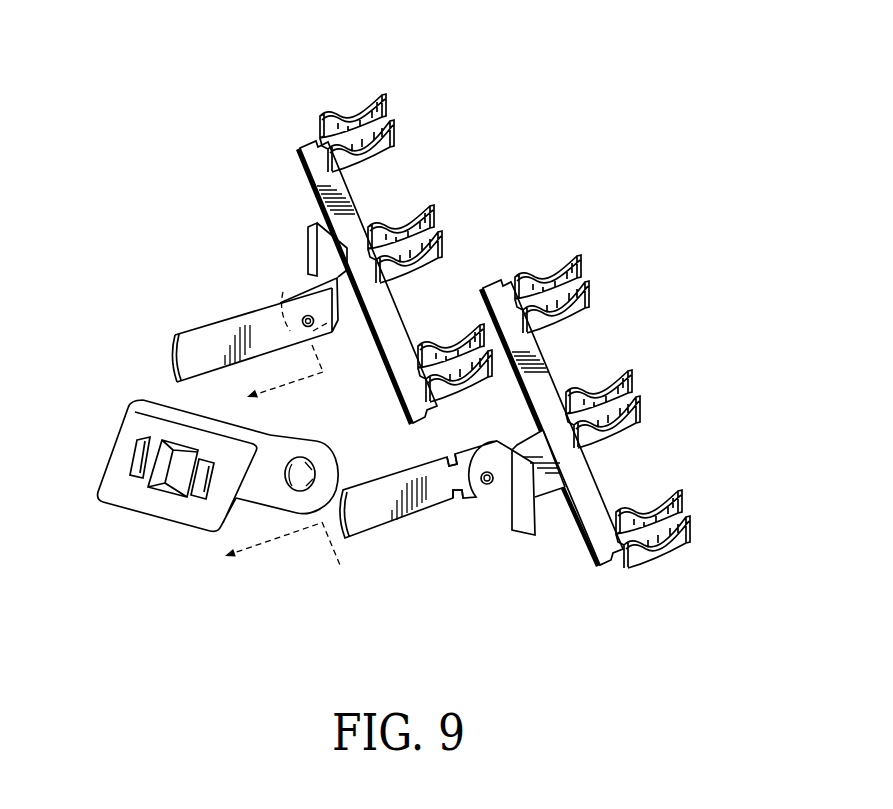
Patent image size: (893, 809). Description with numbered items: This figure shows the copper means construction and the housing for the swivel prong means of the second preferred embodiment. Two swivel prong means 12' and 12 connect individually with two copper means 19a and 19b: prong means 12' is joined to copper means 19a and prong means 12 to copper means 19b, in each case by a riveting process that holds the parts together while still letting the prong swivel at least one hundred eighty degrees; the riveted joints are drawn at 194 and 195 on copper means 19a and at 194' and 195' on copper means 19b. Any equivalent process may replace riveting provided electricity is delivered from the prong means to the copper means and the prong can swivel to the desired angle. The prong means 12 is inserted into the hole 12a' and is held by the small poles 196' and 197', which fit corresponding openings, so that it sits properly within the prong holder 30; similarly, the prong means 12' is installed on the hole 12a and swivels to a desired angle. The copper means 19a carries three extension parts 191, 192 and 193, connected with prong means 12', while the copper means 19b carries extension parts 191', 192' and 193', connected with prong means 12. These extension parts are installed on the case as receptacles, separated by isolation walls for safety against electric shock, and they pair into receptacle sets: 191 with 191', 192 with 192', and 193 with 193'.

The extension part 191 is at (360, 94).
The extension part 192 is at (440, 211).
The extension part 193 is at (455, 334).
The extension part 191' is at (585, 265).
The extension part 192' is at (640, 382).
The extension part 193' is at (698, 505).
The copper means 19a is at (302, 144).
The copper means 19b is at (607, 560).
The swivel prong means 12 is at (426, 534).
The swivel prong means 12' is at (238, 326).
The hole 12a is at (89, 490).
The hole 12a' is at (152, 518).
The prong holder 30 is at (113, 445).
The pivot bracket 194 is at (336, 336).
The pivot bracket 194' is at (531, 511).
The pivot hole 195 is at (313, 369).
The pivot hole 195' is at (481, 547).
The small pole 196' is at (240, 532).
The small pole 197' is at (287, 523).